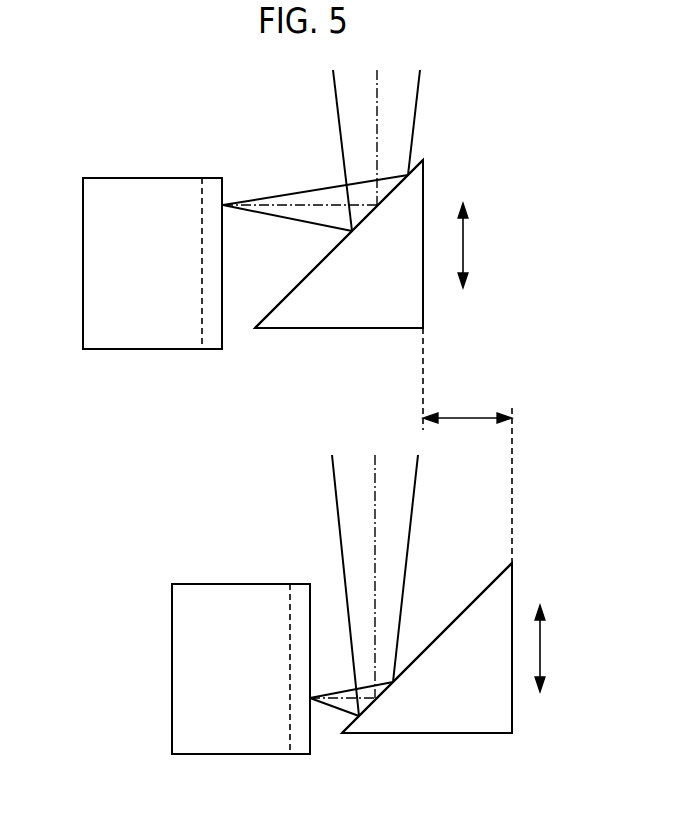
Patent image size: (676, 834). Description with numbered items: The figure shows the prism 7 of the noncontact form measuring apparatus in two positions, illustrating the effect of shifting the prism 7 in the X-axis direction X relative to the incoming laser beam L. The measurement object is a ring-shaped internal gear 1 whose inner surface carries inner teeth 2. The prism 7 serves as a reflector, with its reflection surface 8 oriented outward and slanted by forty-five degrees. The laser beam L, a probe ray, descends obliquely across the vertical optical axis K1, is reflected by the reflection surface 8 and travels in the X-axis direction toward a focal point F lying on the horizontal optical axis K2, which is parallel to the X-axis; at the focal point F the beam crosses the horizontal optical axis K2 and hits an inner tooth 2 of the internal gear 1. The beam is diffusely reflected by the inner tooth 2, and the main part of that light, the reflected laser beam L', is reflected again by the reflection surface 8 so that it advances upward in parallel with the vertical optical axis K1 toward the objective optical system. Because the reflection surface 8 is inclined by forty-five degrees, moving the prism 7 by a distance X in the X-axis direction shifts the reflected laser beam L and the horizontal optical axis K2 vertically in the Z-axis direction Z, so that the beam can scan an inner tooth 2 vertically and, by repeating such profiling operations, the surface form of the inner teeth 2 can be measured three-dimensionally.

The internal gear 1 is at (83, 238).
The inner teeth 2 is at (222, 335).
The prism 7 is at (352, 328).
The reflection surface 8 is at (290, 293).
The focal point F is at (226, 203).
The vertical optical axis K1 is at (377, 97).
The horizontal optical axis K2 is at (317, 205).
The laser beam L is at (312, 393).
The reflected laser beam L' is at (432, 376).
The Z-axis direction Z is at (512, 447).
The X-axis direction X is at (467, 445).